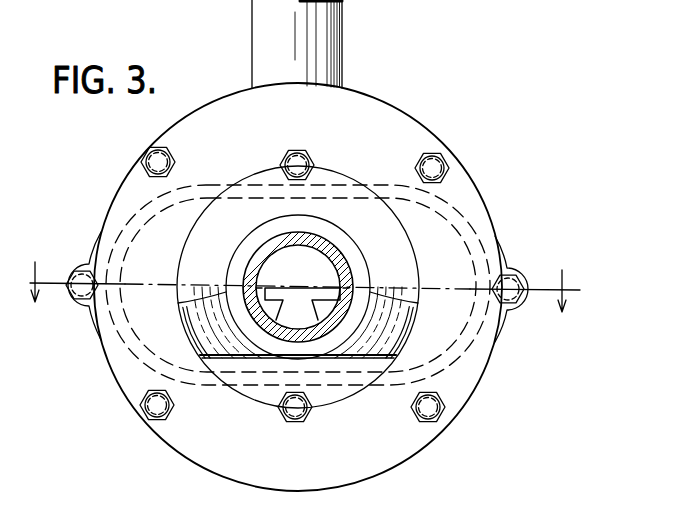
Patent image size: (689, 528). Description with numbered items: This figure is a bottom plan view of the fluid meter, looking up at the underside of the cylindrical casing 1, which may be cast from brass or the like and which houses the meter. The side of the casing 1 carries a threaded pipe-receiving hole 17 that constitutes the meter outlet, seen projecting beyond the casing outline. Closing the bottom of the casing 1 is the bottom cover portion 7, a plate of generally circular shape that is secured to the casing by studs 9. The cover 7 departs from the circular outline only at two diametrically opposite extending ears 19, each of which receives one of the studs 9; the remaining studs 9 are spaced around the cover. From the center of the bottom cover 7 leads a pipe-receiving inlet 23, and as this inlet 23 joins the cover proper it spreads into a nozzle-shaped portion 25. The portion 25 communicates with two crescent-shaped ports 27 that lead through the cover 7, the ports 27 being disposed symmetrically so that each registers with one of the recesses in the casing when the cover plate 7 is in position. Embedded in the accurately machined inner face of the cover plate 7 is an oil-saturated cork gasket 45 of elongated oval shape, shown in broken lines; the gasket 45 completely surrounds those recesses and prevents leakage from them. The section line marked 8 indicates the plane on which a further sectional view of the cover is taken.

The cylindrical casing 1 is at (113, 192).
The bottom cover portion 7 is at (458, 374).
The section line 8- 8 is at (296, 286).
The studs 9 is at (176, 162).
The threaded pipe-receiving hole 17 is at (345, 77).
The ears 19 is at (92, 305).
The pipe-receiving inlet 23 is at (350, 272).
The nozzle-shaped portion 25 is at (192, 308).
The crescent-shaped ports 27 is at (302, 292).
The oil-saturated cork gasket 45 is at (137, 358).